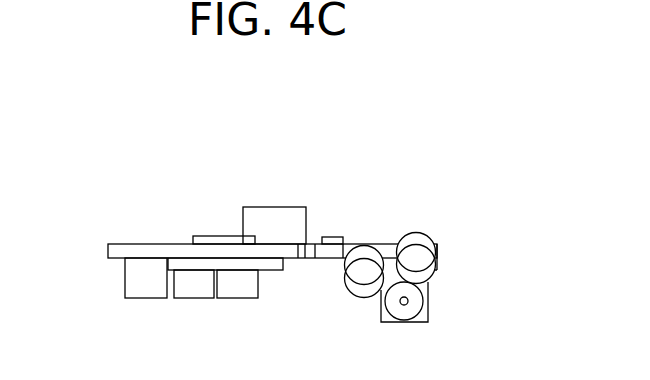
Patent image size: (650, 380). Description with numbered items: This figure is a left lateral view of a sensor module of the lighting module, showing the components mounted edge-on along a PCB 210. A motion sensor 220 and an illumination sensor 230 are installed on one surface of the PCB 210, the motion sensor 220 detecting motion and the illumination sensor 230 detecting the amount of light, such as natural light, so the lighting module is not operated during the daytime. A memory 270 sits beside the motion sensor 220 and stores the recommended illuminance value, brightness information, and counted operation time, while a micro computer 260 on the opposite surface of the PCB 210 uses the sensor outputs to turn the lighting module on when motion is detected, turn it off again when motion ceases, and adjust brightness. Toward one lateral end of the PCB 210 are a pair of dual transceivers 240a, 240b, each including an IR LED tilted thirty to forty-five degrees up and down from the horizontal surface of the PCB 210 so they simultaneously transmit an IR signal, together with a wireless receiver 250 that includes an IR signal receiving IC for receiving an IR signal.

The PCB 210 is at (111, 252).
The motion sensor 220 is at (272, 214).
The illumination sensor 230 is at (333, 237).
The dual transceiver 240a is at (421, 260).
The dual transceiver 240b is at (364, 289).
The wireless receiver 250 is at (409, 300).
The micro computer 260 is at (236, 287).
The memory 270 is at (208, 240).